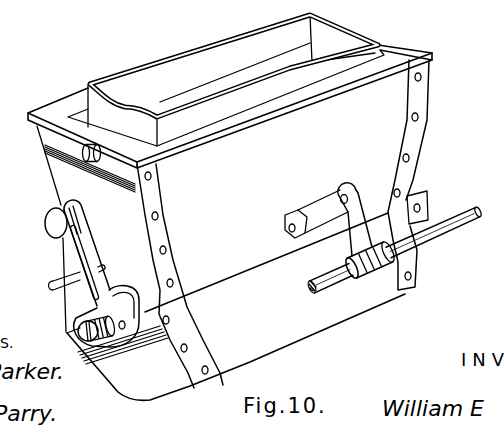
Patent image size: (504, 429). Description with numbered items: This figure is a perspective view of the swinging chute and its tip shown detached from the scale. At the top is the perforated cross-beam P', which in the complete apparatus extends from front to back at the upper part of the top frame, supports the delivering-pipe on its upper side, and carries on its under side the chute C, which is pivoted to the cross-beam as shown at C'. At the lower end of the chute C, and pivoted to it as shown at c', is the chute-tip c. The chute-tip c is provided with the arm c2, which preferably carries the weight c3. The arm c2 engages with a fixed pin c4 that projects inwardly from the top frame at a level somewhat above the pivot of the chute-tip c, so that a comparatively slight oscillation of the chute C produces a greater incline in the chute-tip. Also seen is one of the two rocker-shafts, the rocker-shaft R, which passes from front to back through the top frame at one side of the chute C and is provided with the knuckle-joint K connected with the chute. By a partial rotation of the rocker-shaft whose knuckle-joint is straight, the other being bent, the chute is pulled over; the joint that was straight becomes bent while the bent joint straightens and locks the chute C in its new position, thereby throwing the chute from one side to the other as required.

The perforated cross-beam P' is at (233, 80).
The chute C is at (230, 216).
The chute-tip c is at (236, 346).
The pivot of the chute C' is at (52, 166).
The knuckle-joint K is at (352, 190).
The rocker-shaft R is at (462, 213).
The weight c3 is at (45, 225).
The arm c2 is at (85, 255).
The fixed pin c4 is at (54, 283).
The pivot of the chute-tip c' is at (80, 324).